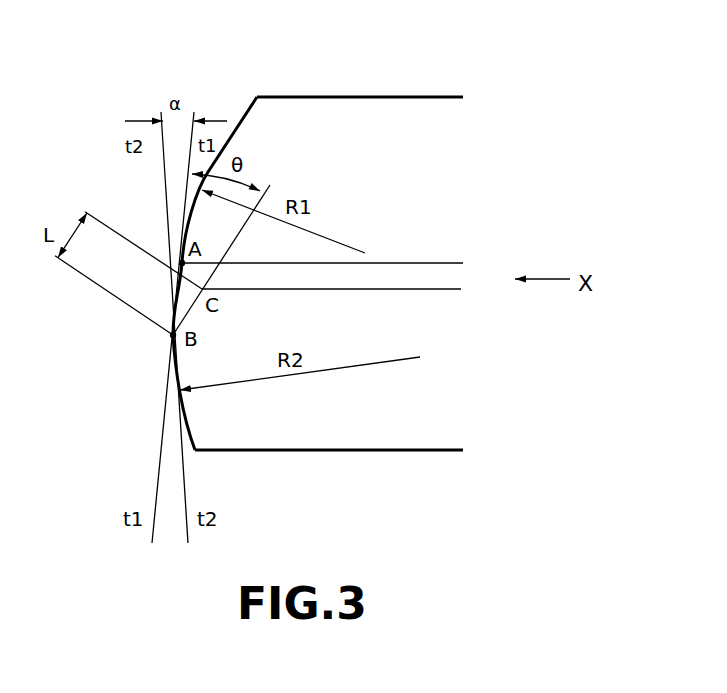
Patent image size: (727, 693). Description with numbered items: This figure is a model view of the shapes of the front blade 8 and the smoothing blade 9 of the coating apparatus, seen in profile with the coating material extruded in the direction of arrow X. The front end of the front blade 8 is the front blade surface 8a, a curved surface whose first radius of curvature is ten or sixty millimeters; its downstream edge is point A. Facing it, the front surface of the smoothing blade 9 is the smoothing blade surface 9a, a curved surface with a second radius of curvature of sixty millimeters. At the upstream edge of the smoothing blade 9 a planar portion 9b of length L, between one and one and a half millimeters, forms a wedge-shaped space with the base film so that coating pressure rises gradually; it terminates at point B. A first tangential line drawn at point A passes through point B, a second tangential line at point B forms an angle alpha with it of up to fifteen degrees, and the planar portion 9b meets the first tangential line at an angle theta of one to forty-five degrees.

The front blade 8 is at (322, 152).
The front blade surface 8a is at (238, 121).
The smoothing blade 9 is at (278, 381).
The smoothing blade surface 9a is at (188, 417).
The planar portion 9b is at (188, 311).